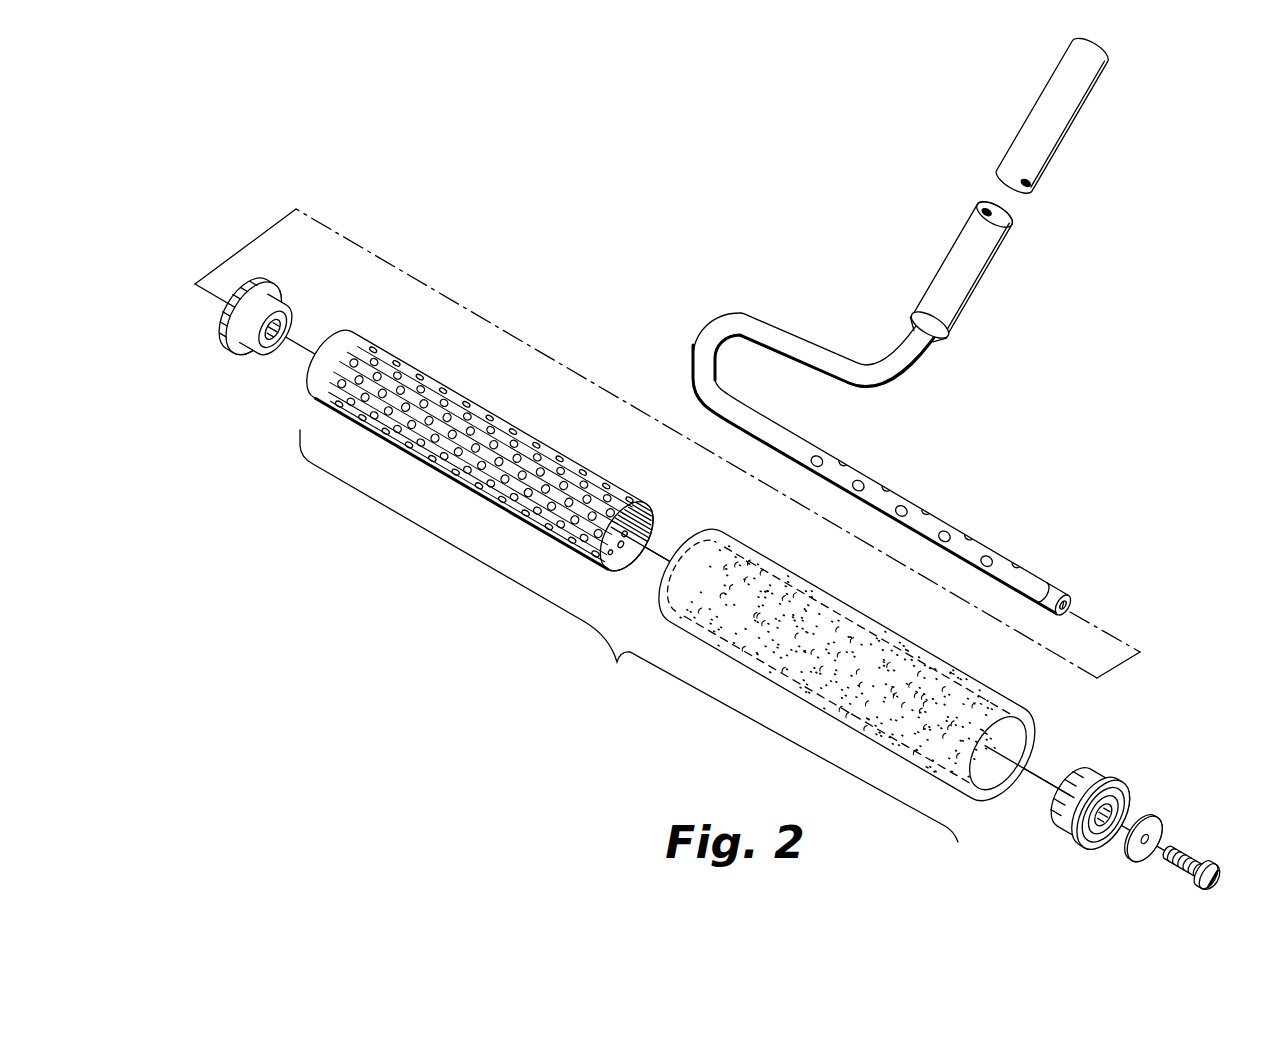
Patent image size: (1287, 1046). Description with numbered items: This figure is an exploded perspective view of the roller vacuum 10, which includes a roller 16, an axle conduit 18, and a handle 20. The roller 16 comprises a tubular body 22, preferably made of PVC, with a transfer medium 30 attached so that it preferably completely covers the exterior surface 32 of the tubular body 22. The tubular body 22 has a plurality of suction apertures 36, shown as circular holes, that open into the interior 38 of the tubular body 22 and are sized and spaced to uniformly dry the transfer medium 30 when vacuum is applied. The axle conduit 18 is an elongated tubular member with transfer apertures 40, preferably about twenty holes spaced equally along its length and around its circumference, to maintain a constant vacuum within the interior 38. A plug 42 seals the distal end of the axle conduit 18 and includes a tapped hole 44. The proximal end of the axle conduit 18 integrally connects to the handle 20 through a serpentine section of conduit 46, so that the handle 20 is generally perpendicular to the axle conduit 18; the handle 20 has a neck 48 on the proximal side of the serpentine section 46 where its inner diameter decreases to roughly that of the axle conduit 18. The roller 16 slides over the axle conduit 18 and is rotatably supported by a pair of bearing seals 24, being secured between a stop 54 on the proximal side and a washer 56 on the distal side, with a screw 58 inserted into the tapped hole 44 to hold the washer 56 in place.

The roller vacuum 10 is at (460, 663).
The roller 16 is at (629, 636).
The axle conduit 18 is at (903, 460).
The handle 20 is at (1049, 134).
The tubular body 22 is at (492, 467).
The bearing seals 24 is at (284, 318).
The transfer medium 30 is at (984, 705).
The exterior surface 32 is at (578, 556).
The suction apertures 36 is at (536, 453).
The interior 38 is at (618, 561).
The transfer aperture 40 is at (941, 531).
The plug 42 is at (1060, 587).
The tapped hole 44 is at (1063, 604).
The serpentine section of conduit 46 is at (761, 318).
The neck 48 is at (939, 331).
The stop 54 is at (731, 436).
The washer 56 is at (1158, 826).
The screw 58 is at (1218, 872).